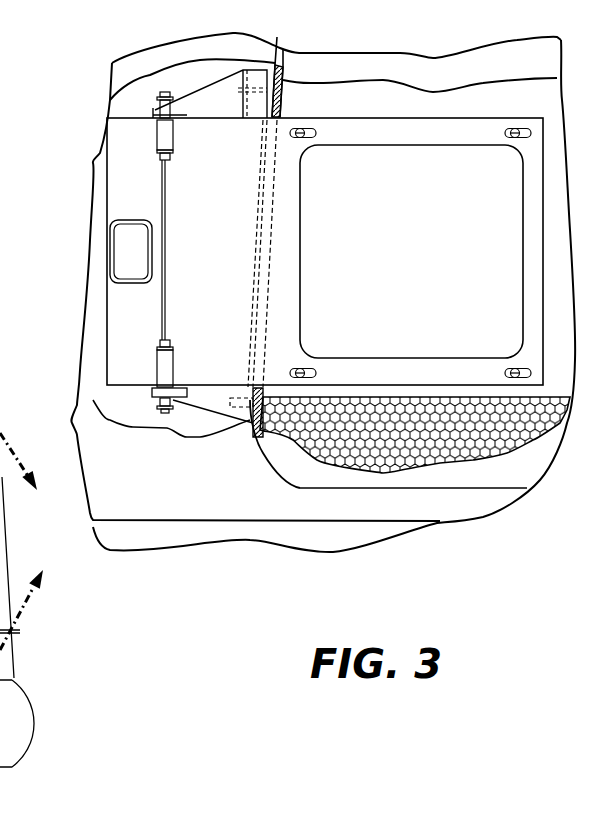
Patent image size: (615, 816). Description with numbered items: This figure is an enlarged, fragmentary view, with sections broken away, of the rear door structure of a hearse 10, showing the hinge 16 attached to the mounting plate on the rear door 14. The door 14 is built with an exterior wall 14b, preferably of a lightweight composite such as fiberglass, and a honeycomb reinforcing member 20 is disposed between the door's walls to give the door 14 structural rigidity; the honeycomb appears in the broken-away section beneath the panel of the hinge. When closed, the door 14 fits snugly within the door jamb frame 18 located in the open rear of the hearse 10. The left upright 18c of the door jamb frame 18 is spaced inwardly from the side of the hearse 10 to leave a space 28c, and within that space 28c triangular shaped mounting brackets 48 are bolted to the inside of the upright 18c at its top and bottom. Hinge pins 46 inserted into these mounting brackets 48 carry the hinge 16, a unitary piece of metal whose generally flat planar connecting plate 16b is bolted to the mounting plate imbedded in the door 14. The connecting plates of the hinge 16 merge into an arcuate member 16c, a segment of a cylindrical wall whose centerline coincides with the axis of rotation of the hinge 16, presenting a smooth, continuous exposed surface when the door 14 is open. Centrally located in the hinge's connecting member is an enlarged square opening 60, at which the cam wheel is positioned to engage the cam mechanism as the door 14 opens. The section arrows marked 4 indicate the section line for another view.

The hearse 10 is at (240, 568).
The door 14 is at (533, 460).
The exterior wall 14b is at (502, 477).
The hinge 16 is at (122, 312).
The connecting plate 16b is at (367, 132).
The arcuate member 16c is at (215, 357).
The door jamb frame 18 is at (257, 457).
The left upright 18c is at (283, 105).
The honeycomb reinforcing member 20 is at (513, 425).
The space 28c is at (133, 407).
The hinge pins 46 is at (163, 92).
The mounting brackets 48 is at (203, 97).
The square opening 60 is at (124, 246).
The section line 4- 4 is at (23, 600).